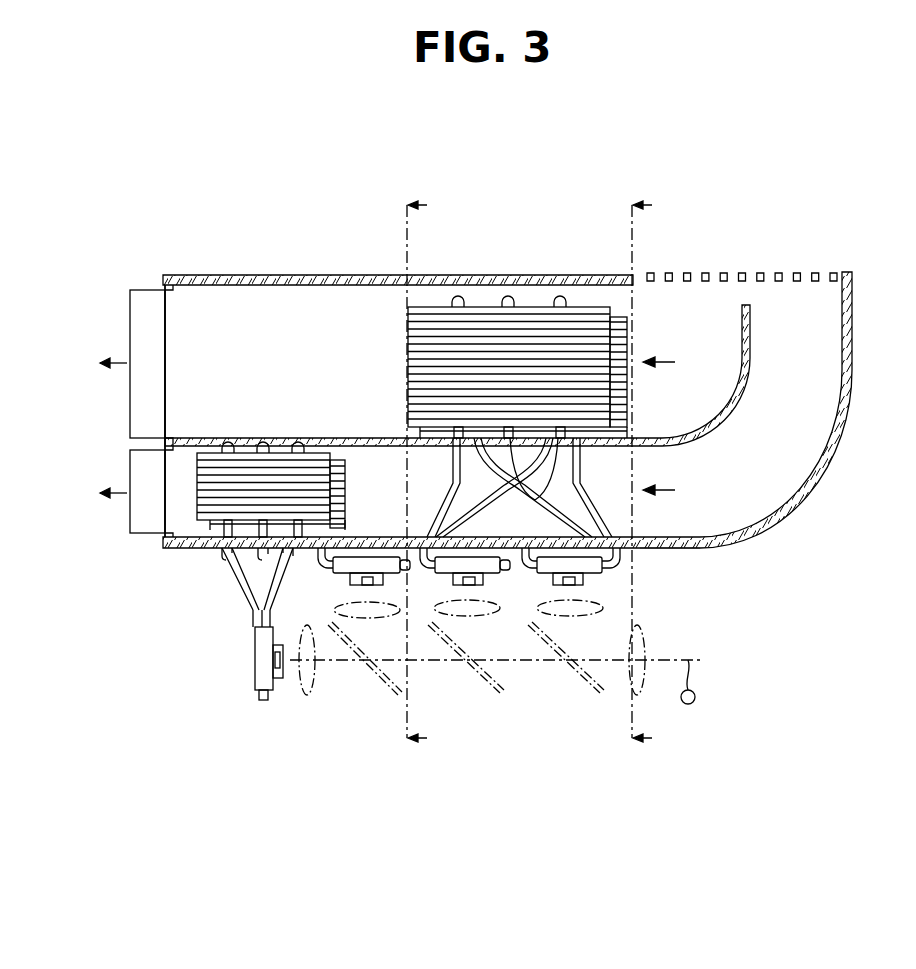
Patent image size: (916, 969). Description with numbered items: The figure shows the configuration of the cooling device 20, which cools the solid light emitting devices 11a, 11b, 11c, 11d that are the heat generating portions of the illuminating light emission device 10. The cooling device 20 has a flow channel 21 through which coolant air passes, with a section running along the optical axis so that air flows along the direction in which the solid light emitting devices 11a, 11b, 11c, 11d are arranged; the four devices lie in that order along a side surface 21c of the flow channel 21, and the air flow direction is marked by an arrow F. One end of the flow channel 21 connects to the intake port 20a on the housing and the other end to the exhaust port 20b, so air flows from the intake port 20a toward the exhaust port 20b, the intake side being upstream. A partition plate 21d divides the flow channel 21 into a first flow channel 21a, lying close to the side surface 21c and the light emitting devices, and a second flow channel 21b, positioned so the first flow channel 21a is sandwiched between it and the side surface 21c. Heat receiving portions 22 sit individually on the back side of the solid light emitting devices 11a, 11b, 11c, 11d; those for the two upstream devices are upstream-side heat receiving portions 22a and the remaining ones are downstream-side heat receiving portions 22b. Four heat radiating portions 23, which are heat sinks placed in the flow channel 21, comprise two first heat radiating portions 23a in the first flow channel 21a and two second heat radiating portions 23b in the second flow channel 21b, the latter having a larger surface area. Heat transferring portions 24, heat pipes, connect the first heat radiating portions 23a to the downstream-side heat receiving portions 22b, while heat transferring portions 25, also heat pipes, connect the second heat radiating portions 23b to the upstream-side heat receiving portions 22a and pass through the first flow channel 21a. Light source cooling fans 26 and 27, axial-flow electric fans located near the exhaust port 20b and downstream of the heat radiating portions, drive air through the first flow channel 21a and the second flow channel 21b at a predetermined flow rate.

The illuminating light emission device 10 is at (584, 706).
The solid light emitting device 11a is at (585, 584).
The solid light emitting device 11b is at (483, 585).
The solid light emitting device 11c is at (365, 617).
The solid light emitting device 11d is at (283, 675).
The cooling device 20 is at (812, 592).
The intake port 20a is at (748, 243).
The exhaust port 20b is at (105, 410).
The flow channel 21 is at (523, 406).
The first flow channel 21a is at (192, 548).
The second flow channel 21b is at (235, 287).
The side surface 21c is at (640, 548).
The partition plate 21d is at (287, 437).
The heat receiving portions 22 is at (469, 681).
The upstream-side heat receiving portions 22a is at (548, 573).
The downstream-side heat receiving portions 22b is at (343, 573).
The heat radiating portions 23 is at (412, 326).
The first heat radiating portions 23a is at (348, 492).
The second heat radiating portions 23b is at (617, 317).
The heat transferring portions 24 is at (262, 612).
The heat transferring portions 25 is at (520, 480).
The light source cooling fan 26 is at (130, 520).
The light source cooling fan 27 is at (130, 308).